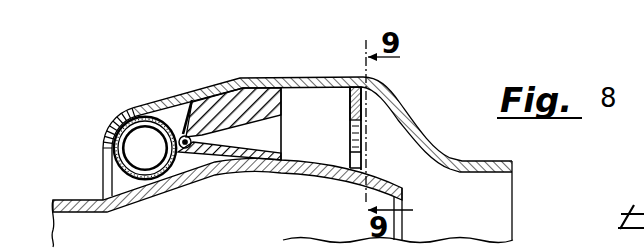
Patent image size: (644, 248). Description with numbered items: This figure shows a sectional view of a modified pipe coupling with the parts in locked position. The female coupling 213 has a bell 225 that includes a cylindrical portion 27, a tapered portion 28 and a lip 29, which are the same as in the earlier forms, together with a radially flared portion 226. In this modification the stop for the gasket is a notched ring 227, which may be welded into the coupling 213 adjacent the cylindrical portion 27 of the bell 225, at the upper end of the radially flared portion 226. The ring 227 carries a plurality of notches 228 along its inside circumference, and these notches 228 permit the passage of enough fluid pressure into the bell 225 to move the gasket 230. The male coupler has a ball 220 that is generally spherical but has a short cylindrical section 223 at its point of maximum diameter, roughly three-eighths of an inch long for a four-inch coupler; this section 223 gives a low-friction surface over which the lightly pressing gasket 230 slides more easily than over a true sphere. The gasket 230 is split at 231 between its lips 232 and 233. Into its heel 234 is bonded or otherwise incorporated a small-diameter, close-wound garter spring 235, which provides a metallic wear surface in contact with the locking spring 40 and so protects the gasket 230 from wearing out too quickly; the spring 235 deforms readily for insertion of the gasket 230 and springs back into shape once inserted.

The cylindrical portion 27 is at (290, 78).
The tapered portion 28 is at (165, 117).
The lip 29 is at (108, 134).
The locking spring 40 is at (113, 163).
The coupling 213 is at (500, 162).
The ball 220 is at (160, 189).
The short cylindrical section 223 is at (256, 174).
The bell 225 is at (393, 82).
The radially flared portion 226 is at (406, 110).
The notched ring 227 is at (362, 142).
The notches 228 is at (362, 167).
The gasket 230 is at (257, 92).
The split 231 is at (210, 131).
The lip 232 is at (282, 99).
The lip 233 is at (283, 157).
The heel 234 is at (158, 121).
The garter spring 235 is at (186, 136).